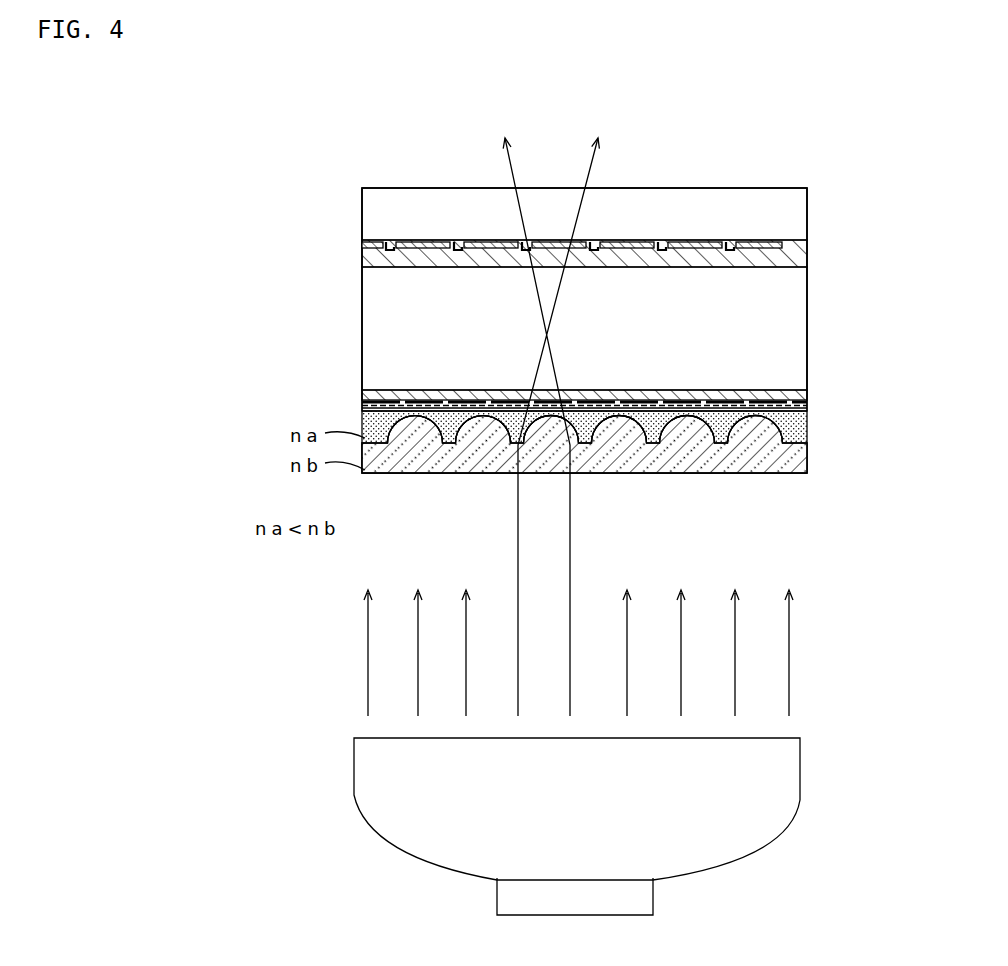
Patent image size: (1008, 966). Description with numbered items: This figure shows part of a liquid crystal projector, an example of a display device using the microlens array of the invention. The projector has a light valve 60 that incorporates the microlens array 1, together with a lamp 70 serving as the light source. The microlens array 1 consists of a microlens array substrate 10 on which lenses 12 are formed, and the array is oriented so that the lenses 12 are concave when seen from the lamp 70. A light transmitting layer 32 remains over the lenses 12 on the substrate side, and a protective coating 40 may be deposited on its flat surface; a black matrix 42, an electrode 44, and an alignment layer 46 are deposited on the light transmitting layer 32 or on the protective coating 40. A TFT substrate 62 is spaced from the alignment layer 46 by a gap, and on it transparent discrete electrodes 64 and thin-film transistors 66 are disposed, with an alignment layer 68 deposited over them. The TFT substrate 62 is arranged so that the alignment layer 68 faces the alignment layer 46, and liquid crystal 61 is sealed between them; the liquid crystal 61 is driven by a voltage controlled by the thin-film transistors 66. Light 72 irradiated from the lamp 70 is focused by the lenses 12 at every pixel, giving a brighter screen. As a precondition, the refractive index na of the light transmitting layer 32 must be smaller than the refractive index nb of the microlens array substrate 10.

The microlens array 1 is at (779, 491).
The microlens array substrate 10 is at (800, 470).
The lenses 12 is at (755, 433).
The light transmitting layer 32 is at (800, 428).
The protective coating 40 is at (800, 408).
The black matrix 42 is at (782, 392).
The electrode 44 is at (755, 390).
The alignment layer 46 is at (738, 390).
The light valve 60 is at (324, 358).
The liquid crystal 61 is at (793, 288).
The TFT substrate 62 is at (793, 206).
The transparent discrete electrodes 64 is at (760, 243).
The thin-film transistors 66 is at (727, 243).
The alignment layer 68 is at (790, 258).
The lamp 70 is at (381, 759).
The light 72 is at (791, 656).